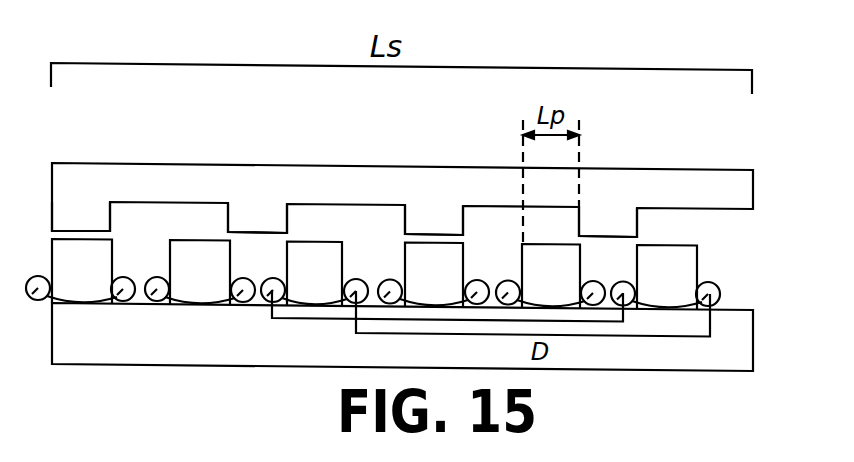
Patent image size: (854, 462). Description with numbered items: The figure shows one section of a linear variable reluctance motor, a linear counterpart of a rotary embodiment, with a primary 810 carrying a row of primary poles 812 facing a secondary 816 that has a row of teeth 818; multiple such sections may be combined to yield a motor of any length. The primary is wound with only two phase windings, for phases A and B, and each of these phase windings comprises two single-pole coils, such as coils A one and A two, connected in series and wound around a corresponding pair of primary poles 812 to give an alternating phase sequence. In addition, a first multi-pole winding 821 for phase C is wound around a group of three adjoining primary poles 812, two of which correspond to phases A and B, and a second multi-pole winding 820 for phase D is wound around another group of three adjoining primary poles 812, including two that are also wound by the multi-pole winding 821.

The primary 810 is at (272, 368).
The primary pole 812 is at (374, 279).
The secondary 816 is at (335, 165).
The secondary tooth 818 is at (344, 220).
The second multi-pole winding 820 is at (695, 338).
The first multi-pole winding 821 is at (603, 323).